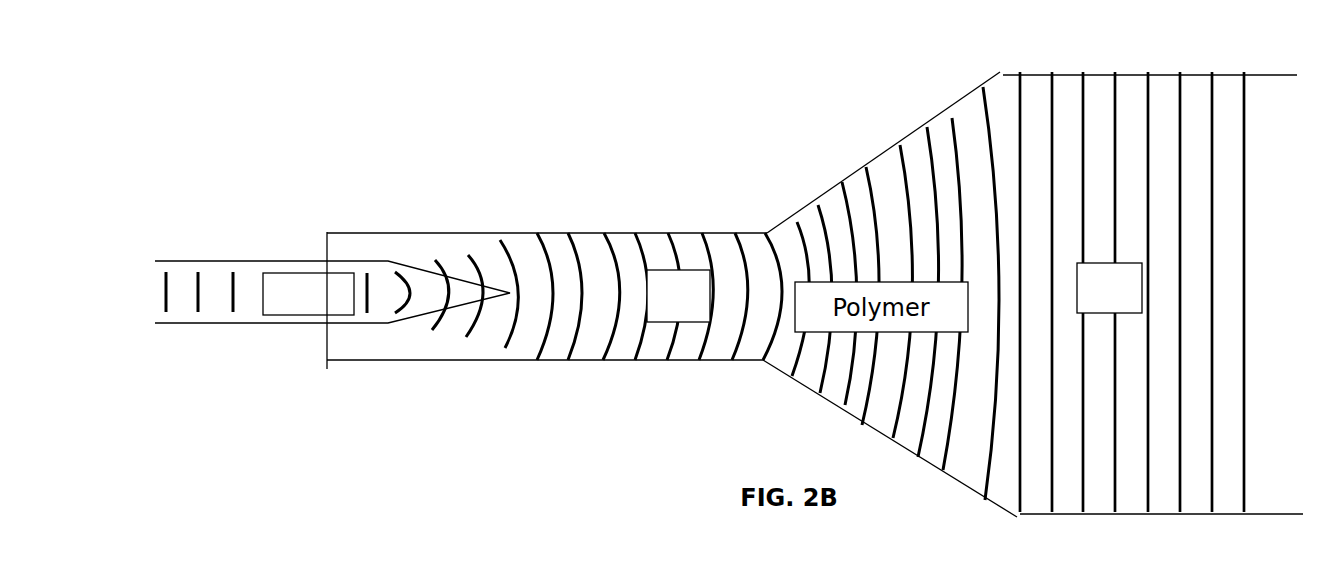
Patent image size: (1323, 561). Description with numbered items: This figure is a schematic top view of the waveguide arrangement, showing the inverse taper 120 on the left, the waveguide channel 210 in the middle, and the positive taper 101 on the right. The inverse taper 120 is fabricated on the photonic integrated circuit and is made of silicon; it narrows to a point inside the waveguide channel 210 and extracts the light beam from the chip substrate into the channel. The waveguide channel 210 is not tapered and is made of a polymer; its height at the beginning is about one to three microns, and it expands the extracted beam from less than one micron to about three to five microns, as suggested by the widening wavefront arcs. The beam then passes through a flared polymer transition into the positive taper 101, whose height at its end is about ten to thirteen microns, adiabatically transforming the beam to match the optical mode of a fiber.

The inverse taper 120 is at (260, 252).
The waveguide channel 210 is at (638, 230).
The positive taper 101 is at (1128, 73).